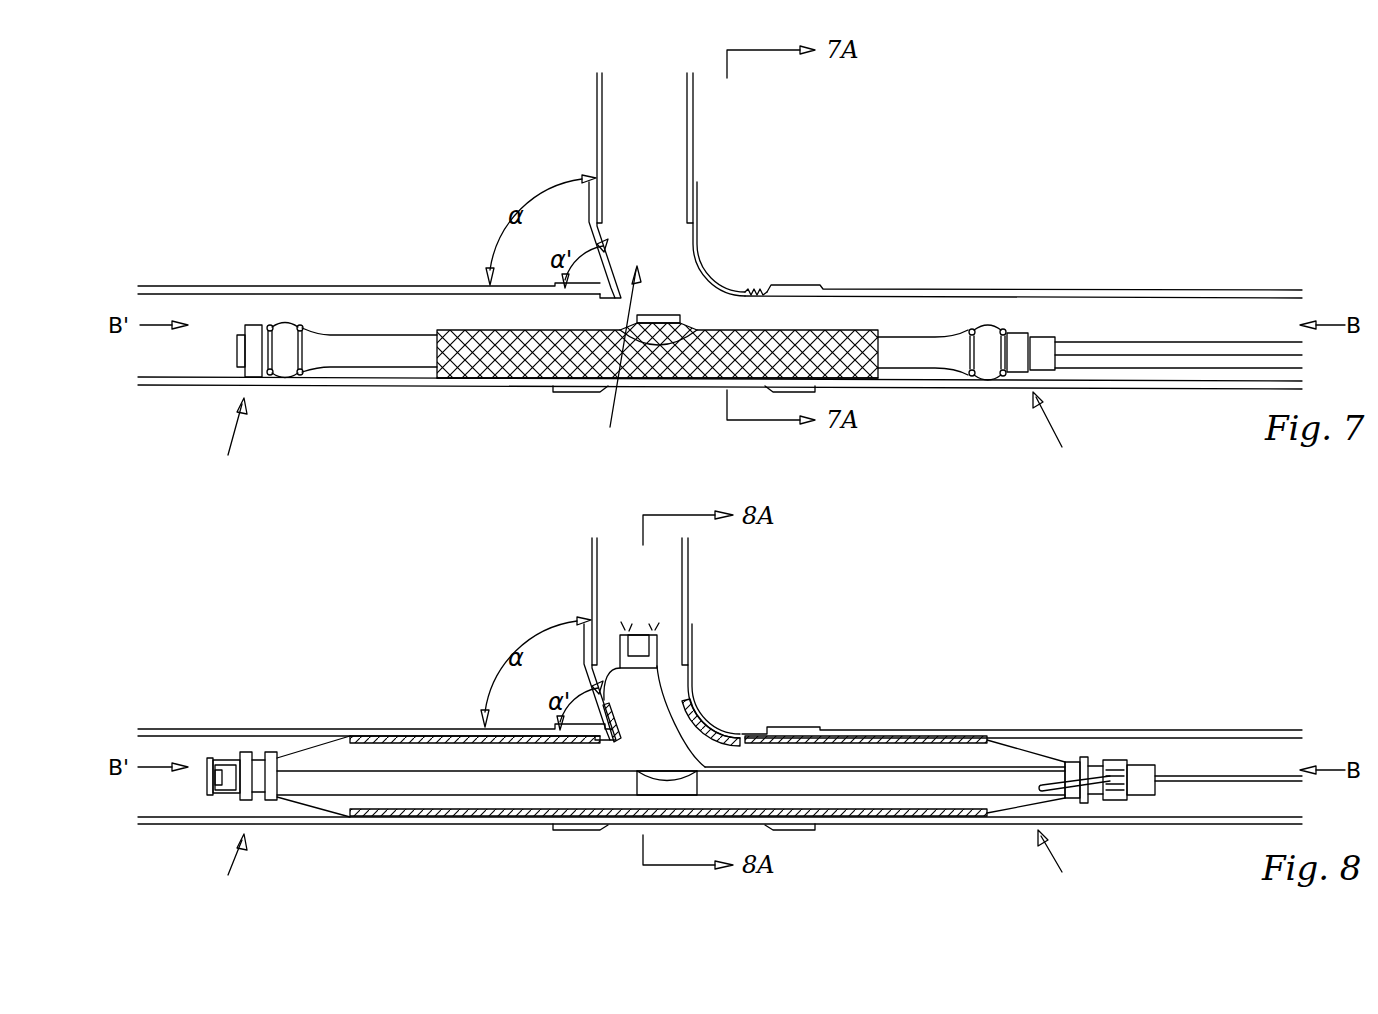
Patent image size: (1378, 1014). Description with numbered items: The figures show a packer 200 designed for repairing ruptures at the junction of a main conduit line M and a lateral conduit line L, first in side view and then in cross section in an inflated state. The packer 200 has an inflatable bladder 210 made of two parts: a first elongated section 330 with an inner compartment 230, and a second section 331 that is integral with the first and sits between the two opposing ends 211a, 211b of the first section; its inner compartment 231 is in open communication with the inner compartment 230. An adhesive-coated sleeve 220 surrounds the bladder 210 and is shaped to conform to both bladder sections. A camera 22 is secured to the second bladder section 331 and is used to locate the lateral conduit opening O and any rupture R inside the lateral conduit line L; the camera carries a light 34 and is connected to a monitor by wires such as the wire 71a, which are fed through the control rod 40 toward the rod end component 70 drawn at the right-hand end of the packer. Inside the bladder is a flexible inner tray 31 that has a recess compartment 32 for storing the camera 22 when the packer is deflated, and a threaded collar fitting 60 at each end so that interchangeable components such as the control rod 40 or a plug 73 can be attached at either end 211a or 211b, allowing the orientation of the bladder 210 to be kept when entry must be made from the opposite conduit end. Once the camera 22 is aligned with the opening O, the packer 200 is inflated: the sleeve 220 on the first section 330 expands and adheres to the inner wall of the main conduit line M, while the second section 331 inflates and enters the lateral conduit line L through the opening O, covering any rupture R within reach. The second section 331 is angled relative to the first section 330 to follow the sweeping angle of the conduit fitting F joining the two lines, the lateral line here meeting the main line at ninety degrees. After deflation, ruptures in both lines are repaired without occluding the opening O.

In FIG. 7, the camera 22 is at (665, 316).
In FIG. 8, the camera 22 is at (620, 640).
In FIG. 8, the inner tray 31 is at (440, 770).
In FIG. 8, the recess compartment 32 is at (648, 786).
In FIG. 8, the light 34 is at (651, 628).
In FIG. 8, the control rod 40 is at (1165, 777).
In FIG. 7, the collar fitting 60 is at (287, 366).
In FIG. 8, the collar fitting 60 is at (262, 755).
In FIG. 8, the distal hub 70 is at (1080, 763).
In FIG. 8, the wire 71a is at (955, 765).
In FIG. 8, the plug 73 is at (210, 760).
In FIG. 7, the packer 200 is at (862, 326).
In FIG. 7, the inflatable bladder 210 is at (380, 335).
In FIG. 7, the opposing end 211a is at (214, 440).
In FIG. 8, the opposing end 211a is at (214, 868).
In FIG. 7, the opposing end 211b is at (1090, 403).
In FIG. 8, the opposing end 211b is at (1078, 865).
In FIG. 7, the adhesive-coated sleeve 220 is at (470, 368).
In FIG. 8, the adhesive-coated sleeve 220 is at (472, 736).
In FIG. 8, the inner compartment 230 is at (905, 742).
In FIG. 8, the inner compartment 231 is at (692, 740).
In FIG. 8, the first elongated section 330 is at (990, 736).
In FIG. 8, the second section 331 is at (670, 672).
In FIG. 7, the lateral conduit line L is at (668, 131).
In FIG. 8, the lateral conduit line L is at (675, 570).
In FIG. 7, the conduit fitting F is at (700, 247).
In FIG. 8, the conduit fitting F is at (705, 705).
In FIG. 7, the rupture R is at (753, 292).
In FIG. 7, the main conduit line M is at (1240, 312).
In FIG. 8, the main conduit line M is at (1240, 757).
In FIG. 7, the lateral conduit opening O is at (619, 359).